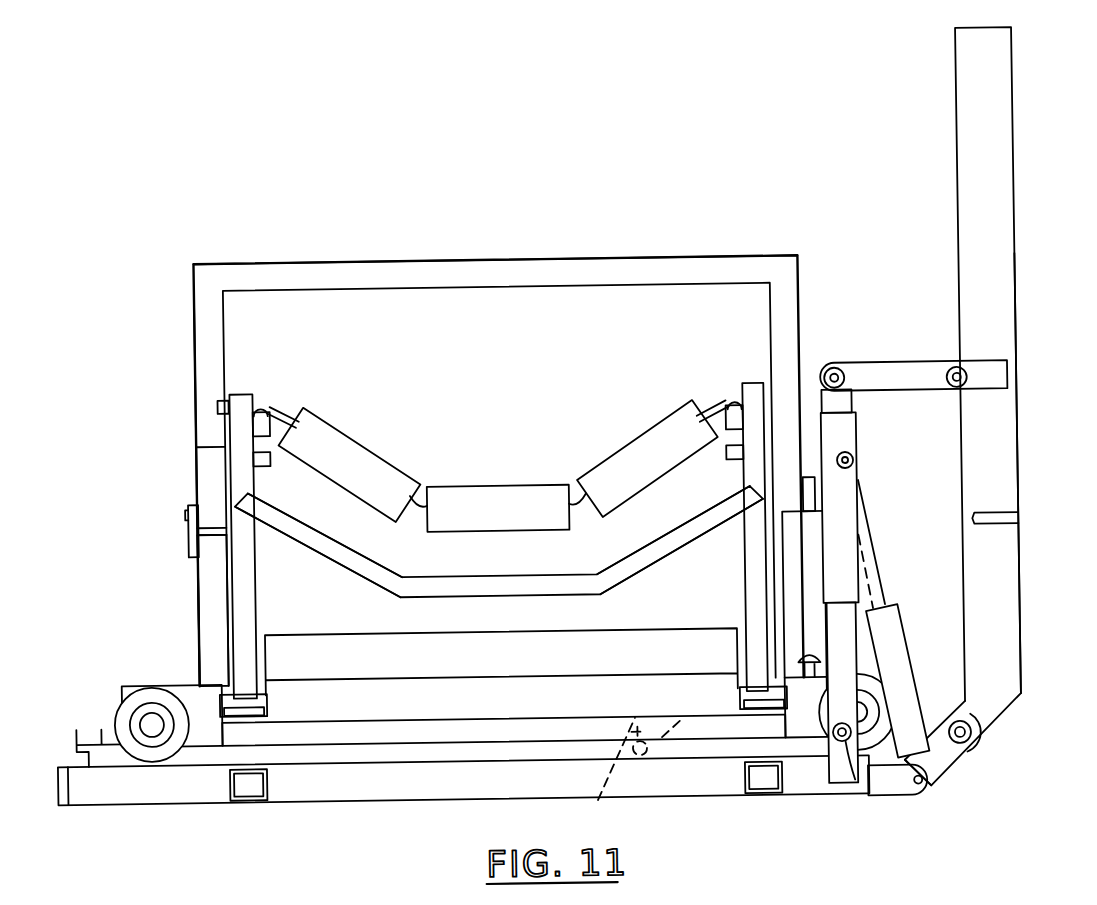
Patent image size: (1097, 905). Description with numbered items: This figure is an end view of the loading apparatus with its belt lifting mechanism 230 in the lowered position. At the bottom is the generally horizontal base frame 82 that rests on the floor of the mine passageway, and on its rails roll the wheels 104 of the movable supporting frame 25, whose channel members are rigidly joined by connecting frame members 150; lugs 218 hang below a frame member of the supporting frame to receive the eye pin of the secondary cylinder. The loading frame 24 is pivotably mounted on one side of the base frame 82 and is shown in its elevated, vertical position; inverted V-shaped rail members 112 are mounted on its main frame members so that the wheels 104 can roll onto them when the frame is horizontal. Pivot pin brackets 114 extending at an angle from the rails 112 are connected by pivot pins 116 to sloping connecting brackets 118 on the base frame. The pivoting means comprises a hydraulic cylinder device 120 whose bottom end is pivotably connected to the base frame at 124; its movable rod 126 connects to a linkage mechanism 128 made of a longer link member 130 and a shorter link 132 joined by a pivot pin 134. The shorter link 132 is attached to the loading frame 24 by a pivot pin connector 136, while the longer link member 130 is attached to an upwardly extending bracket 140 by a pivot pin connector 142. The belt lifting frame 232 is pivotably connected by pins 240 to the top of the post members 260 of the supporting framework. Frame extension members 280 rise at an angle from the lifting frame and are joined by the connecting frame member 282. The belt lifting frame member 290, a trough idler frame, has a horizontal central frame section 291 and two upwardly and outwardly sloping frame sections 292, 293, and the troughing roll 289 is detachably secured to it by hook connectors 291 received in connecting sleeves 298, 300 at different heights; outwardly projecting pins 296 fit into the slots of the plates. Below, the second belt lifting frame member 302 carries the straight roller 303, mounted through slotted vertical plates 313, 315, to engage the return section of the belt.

The loading frame 24 is at (1019, 250).
The supporting frame 25 is at (180, 678).
The base frame 82 is at (708, 779).
The wheels 104 is at (135, 709).
The rail members 112 is at (968, 159).
The pivot pin brackets 114 is at (992, 705).
The pivot pins 116 is at (973, 748).
The connecting brackets 118 is at (941, 763).
The hydraulic cylinder device 120 is at (888, 653).
The bottom end pivot connection 124 is at (923, 799).
The movable rod 126 is at (877, 563).
The linkage mechanism 128 is at (863, 437).
The longer link member 130 is at (860, 487).
The shorter link 132 is at (914, 383).
The pivot pin 134 is at (834, 374).
The pivot pin connector 136 is at (969, 381).
The upwardly extending bracket 140 is at (848, 782).
The pivot pin connector 142 is at (834, 794).
The connecting frame members 150 is at (419, 698).
The lugs 218 is at (618, 778).
The belt lifting mechanism 230 is at (382, 262).
The belt lifting frame 232 is at (212, 344).
The pins 240 is at (185, 512).
The post members 260 is at (214, 588).
The frame extension member 280 is at (209, 320).
The connecting frame member 282 is at (545, 285).
The troughing roll 289 is at (488, 497).
The belt lifting frame member 290 is at (555, 582).
The hook connectors 291 is at (270, 408).
The sloping frame section 292 is at (351, 549).
The sloping frame section 293 is at (673, 537).
The pin 296 is at (223, 400).
The connecting sleeve 298 is at (254, 405).
The connecting sleeve 300 is at (270, 463).
The second belt lifting frame member 302 is at (250, 576).
The straight roller 303 is at (366, 647).
The vertical plate 313 is at (264, 623).
The vertical plate 315 is at (745, 636).